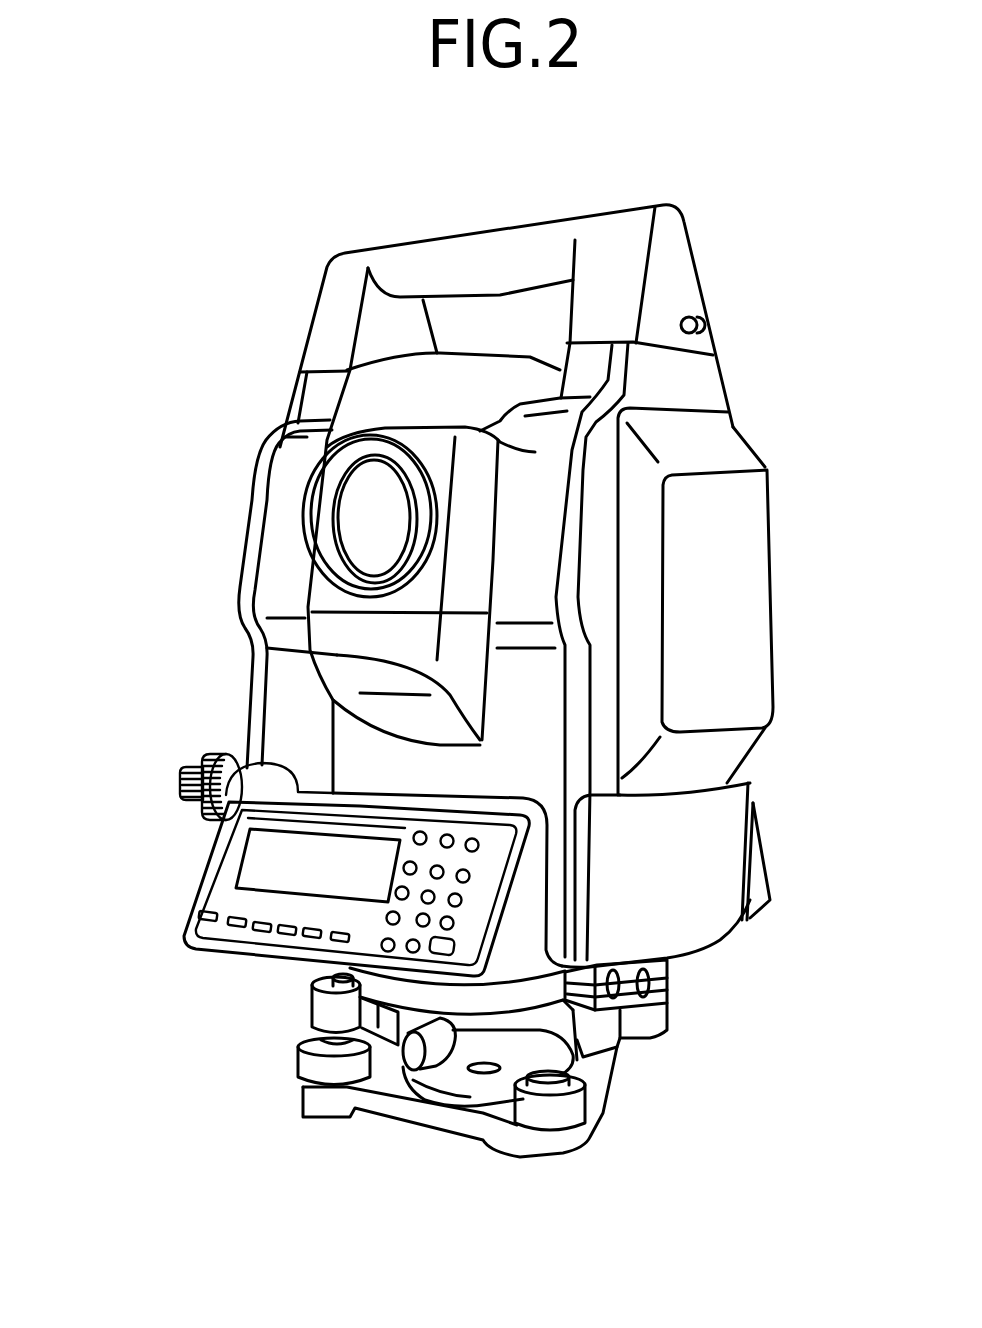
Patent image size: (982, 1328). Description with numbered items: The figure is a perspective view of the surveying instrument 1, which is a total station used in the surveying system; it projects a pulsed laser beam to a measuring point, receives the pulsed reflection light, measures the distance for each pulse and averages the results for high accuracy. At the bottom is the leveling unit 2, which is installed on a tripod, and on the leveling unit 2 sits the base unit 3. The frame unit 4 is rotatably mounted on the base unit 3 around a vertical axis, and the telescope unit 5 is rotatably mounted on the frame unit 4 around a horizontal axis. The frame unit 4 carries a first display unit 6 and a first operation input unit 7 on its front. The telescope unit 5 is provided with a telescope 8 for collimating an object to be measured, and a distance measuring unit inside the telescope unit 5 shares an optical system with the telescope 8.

The surveying instrument 1 is at (120, 249).
The leveling unit 2 is at (305, 1105).
The base unit 3 is at (667, 1030).
The frame unit 4 is at (745, 432).
The telescope unit 5 is at (340, 657).
The first display unit 6 is at (277, 855).
The first operation input unit 7 is at (270, 938).
The telescope 8 is at (363, 507).